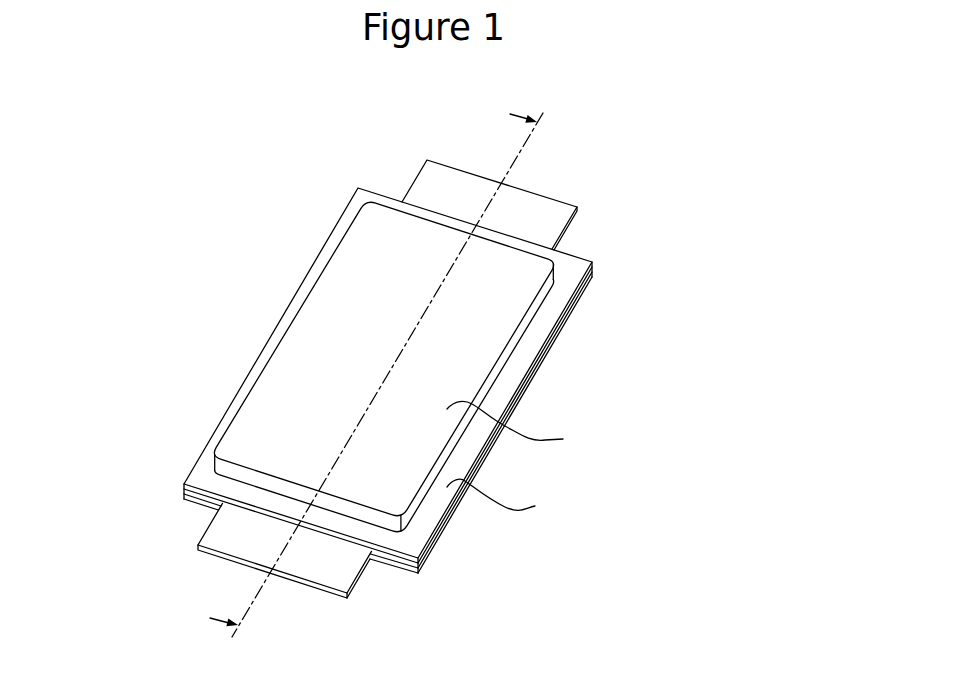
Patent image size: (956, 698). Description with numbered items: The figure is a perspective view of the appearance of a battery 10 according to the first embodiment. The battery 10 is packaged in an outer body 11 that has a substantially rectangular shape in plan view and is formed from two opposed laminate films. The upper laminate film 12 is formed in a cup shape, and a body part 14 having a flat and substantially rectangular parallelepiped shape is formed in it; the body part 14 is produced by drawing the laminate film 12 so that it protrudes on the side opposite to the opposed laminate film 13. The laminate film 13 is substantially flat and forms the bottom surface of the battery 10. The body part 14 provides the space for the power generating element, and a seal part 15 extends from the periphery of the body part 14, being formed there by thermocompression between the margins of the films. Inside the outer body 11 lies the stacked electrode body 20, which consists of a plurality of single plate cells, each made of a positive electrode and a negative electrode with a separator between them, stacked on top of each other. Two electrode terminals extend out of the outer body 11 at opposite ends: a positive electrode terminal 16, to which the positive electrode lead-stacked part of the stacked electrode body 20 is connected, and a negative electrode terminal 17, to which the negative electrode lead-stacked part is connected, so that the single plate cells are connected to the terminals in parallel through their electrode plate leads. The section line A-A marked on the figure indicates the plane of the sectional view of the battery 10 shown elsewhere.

The battery 10 is at (663, 137).
The outer body 11 is at (88, 430).
The laminate film 12 is at (203, 462).
The laminate film 13 is at (203, 500).
The body part 14 is at (519, 425).
The seal part 15 is at (504, 498).
The positive electrode terminal 16 is at (447, 180).
The negative electrode terminal 17 is at (327, 577).
The stacked electrode body 20 is at (448, 363).